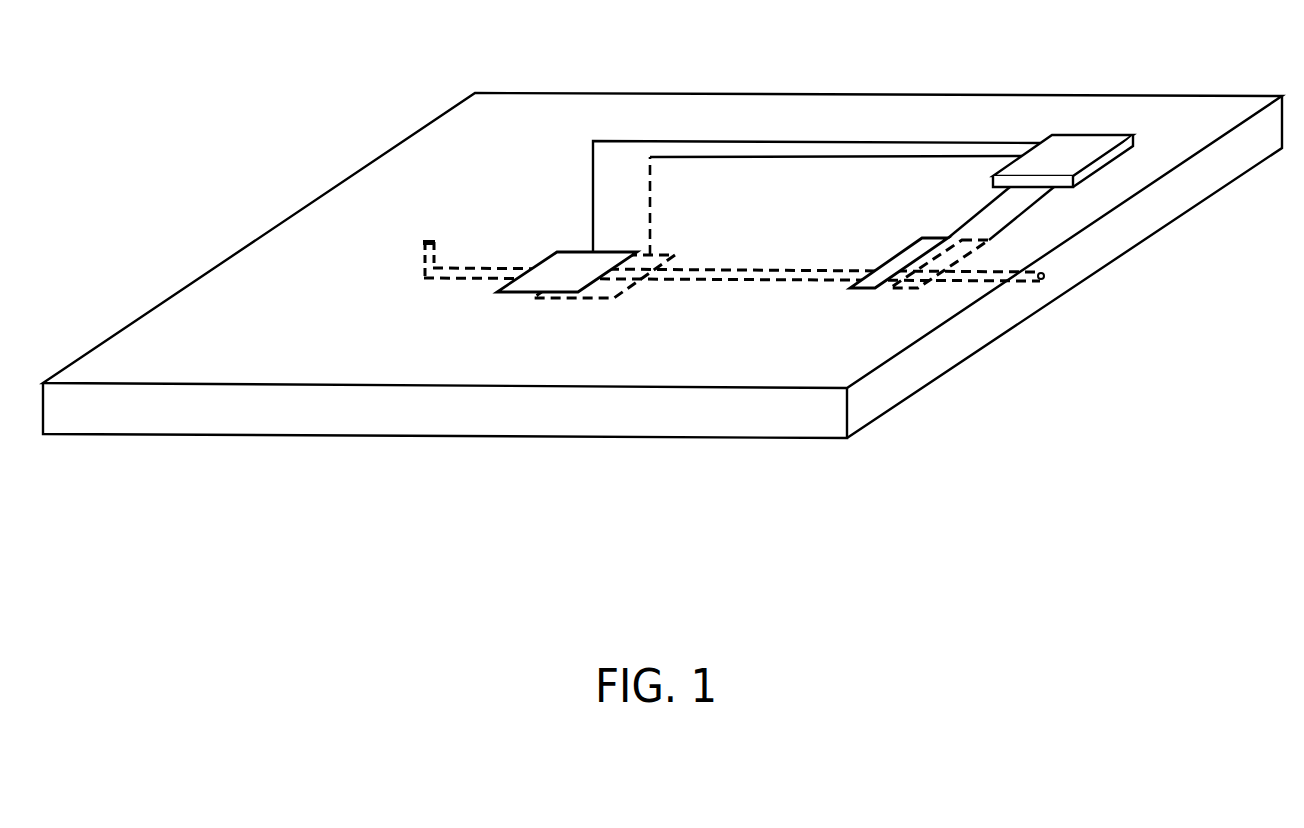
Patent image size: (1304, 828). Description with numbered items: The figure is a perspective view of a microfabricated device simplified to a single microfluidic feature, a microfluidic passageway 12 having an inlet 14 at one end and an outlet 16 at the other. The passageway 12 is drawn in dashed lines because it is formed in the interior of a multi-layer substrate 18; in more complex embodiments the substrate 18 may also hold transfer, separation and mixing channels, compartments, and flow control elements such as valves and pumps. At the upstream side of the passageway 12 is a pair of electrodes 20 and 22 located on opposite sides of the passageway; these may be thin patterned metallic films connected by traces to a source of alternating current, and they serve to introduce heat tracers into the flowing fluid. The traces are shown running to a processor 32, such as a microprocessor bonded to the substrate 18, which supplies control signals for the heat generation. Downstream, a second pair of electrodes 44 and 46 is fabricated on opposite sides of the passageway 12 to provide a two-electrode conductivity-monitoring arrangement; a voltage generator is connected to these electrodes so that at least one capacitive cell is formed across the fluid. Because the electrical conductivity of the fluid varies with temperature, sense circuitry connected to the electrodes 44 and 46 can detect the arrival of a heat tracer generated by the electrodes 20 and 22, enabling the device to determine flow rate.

The microfluidic passageway 12 is at (708, 278).
The inlet 14 is at (429, 240).
The outlet 16 is at (1043, 280).
The substrate 18 is at (878, 395).
The electrode 20 is at (538, 272).
The electrode 22 is at (607, 292).
The processor 32 is at (1093, 140).
The electrode 44 is at (906, 252).
The electrode 46 is at (903, 278).